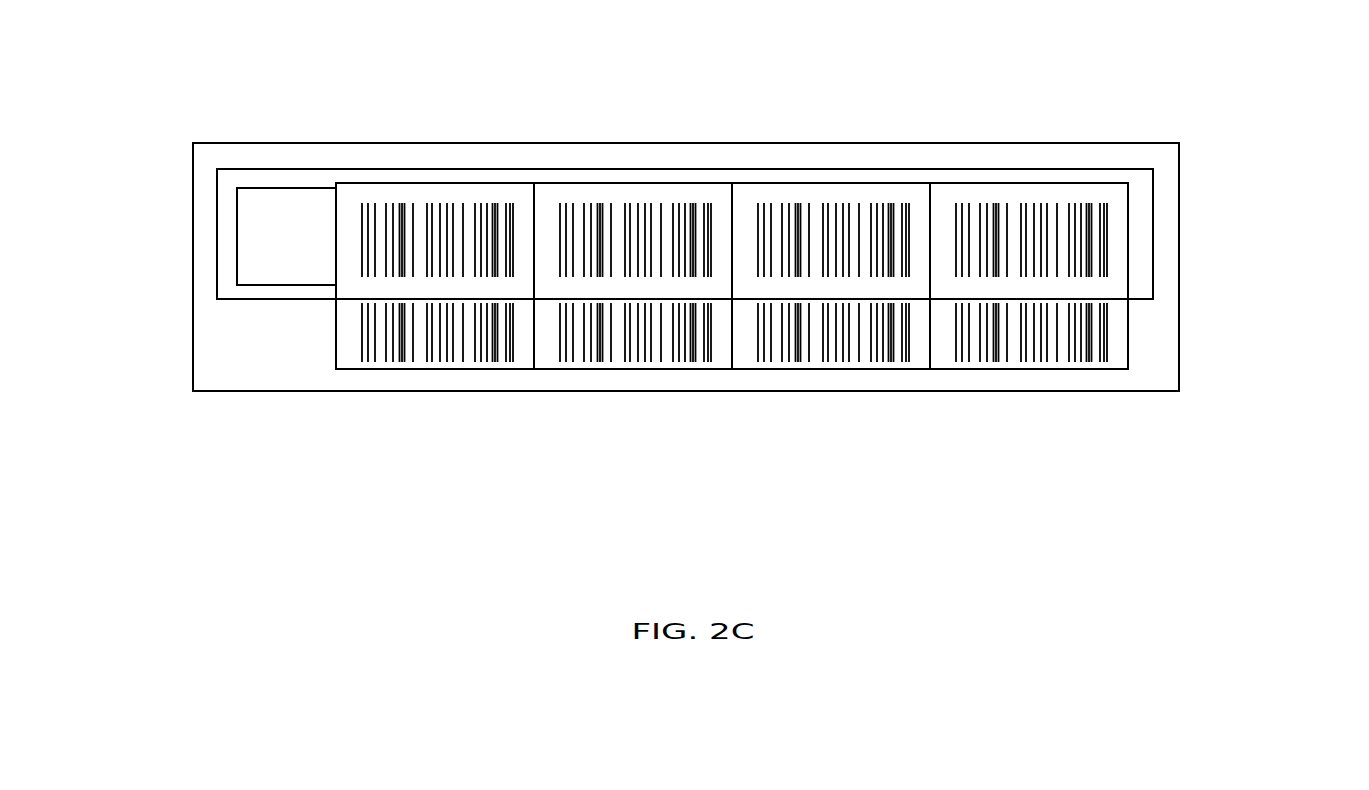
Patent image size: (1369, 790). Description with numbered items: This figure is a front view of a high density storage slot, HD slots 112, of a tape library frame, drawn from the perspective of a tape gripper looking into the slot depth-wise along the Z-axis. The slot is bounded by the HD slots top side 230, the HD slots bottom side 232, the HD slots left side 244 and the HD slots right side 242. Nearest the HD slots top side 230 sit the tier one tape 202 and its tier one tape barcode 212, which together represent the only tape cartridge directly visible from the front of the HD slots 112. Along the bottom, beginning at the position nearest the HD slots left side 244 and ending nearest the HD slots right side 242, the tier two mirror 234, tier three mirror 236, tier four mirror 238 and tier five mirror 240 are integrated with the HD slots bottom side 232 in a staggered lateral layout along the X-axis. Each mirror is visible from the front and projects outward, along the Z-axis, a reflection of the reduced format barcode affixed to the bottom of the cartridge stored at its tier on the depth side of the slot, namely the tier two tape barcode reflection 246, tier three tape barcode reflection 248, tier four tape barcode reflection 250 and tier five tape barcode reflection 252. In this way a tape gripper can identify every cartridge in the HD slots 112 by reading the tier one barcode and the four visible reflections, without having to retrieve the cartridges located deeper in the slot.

The HD slots 112 is at (1080, 148).
The HD slots top side 230 is at (298, 143).
The HD slots bottom side 232 is at (1158, 391).
The HD slots right side 242 is at (1179, 247).
The HD slots left side 244 is at (193, 278).
The tier 1 tape 202 is at (428, 169).
The tier 1 tape barcode 212 is at (610, 183).
The tier 2 mirror 234 is at (353, 369).
The tier 3 mirror 236 is at (553, 369).
The tier 4 mirror 238 is at (750, 369).
The tier 5 mirror 240 is at (948, 369).
The tier 2 tape barcode reflection 246 is at (450, 363).
The tier 3 tape barcode reflection 248 is at (648, 363).
The tier 4 tape barcode reflection 250 is at (845, 363).
The tier 5 tape barcode reflection 252 is at (1043, 363).